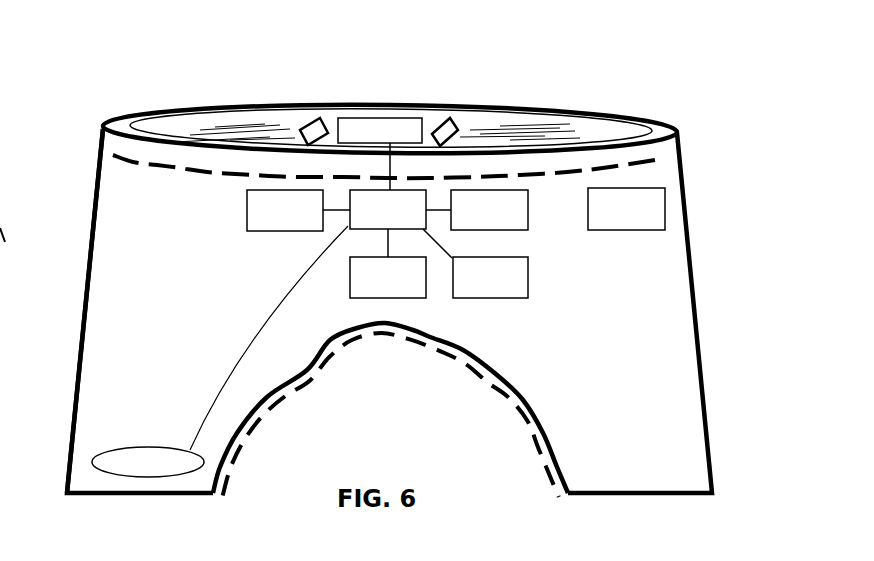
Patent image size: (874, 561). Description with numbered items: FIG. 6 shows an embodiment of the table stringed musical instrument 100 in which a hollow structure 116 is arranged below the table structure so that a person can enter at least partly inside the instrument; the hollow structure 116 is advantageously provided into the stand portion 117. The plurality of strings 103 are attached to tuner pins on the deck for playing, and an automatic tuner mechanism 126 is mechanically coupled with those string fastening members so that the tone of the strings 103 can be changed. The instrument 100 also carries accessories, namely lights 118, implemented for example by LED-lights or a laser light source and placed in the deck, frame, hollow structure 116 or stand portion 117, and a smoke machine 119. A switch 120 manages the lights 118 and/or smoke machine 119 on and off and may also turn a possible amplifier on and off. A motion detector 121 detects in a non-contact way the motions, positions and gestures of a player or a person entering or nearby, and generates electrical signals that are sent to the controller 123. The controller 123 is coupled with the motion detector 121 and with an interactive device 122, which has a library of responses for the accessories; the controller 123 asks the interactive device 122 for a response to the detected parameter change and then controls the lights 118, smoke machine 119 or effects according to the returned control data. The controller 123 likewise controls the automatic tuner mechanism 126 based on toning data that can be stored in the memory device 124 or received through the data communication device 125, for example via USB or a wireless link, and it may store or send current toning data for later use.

The table stringed musical instrument 100 is at (505, 48).
The strings 103 is at (208, 118).
The hollow structure 116 is at (493, 447).
The stand portion 117 is at (97, 370).
The lights 118 is at (203, 172).
The smoke machine 119 is at (150, 447).
The switch 120 is at (626, 209).
The motion detector 121 is at (334, 174).
The interactive device 122 is at (477, 210).
The controller 123 is at (321, 320).
The memory device 124 is at (388, 277).
The data communication device 125 is at (490, 277).
The automatic tuner mechanism 126 is at (438, 122).